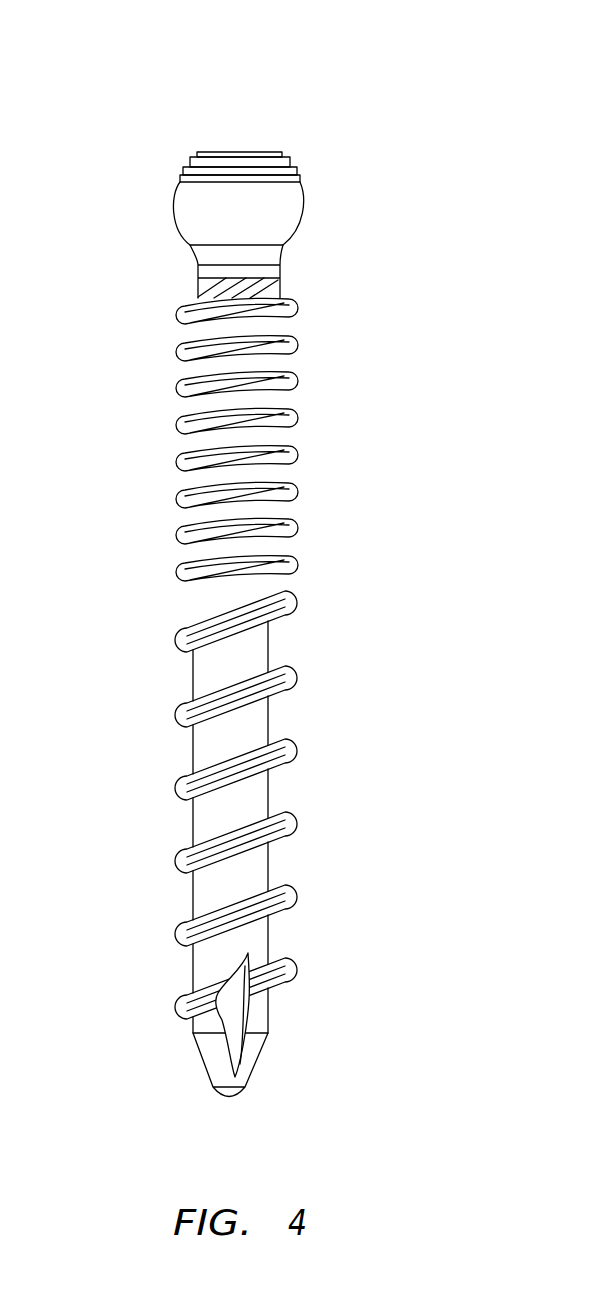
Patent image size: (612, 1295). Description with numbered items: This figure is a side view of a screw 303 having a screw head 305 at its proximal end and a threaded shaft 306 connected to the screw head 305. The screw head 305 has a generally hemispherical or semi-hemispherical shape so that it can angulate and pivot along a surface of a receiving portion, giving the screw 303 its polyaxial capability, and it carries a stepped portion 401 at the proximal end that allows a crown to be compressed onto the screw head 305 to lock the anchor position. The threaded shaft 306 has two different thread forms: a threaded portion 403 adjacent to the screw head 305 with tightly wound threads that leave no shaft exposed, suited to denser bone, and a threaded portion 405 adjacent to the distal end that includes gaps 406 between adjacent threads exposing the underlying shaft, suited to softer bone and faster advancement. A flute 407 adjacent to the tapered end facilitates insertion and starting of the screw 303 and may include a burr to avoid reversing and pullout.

The screw 303 is at (434, 50).
The stepped portion 401 is at (305, 157).
The screw head 305 is at (195, 208).
The threaded portion 403 is at (300, 302).
The threaded portion 405 is at (300, 618).
The threaded shaft 306 is at (193, 678).
The gaps 406 is at (165, 793).
The flute 407 is at (232, 1034).